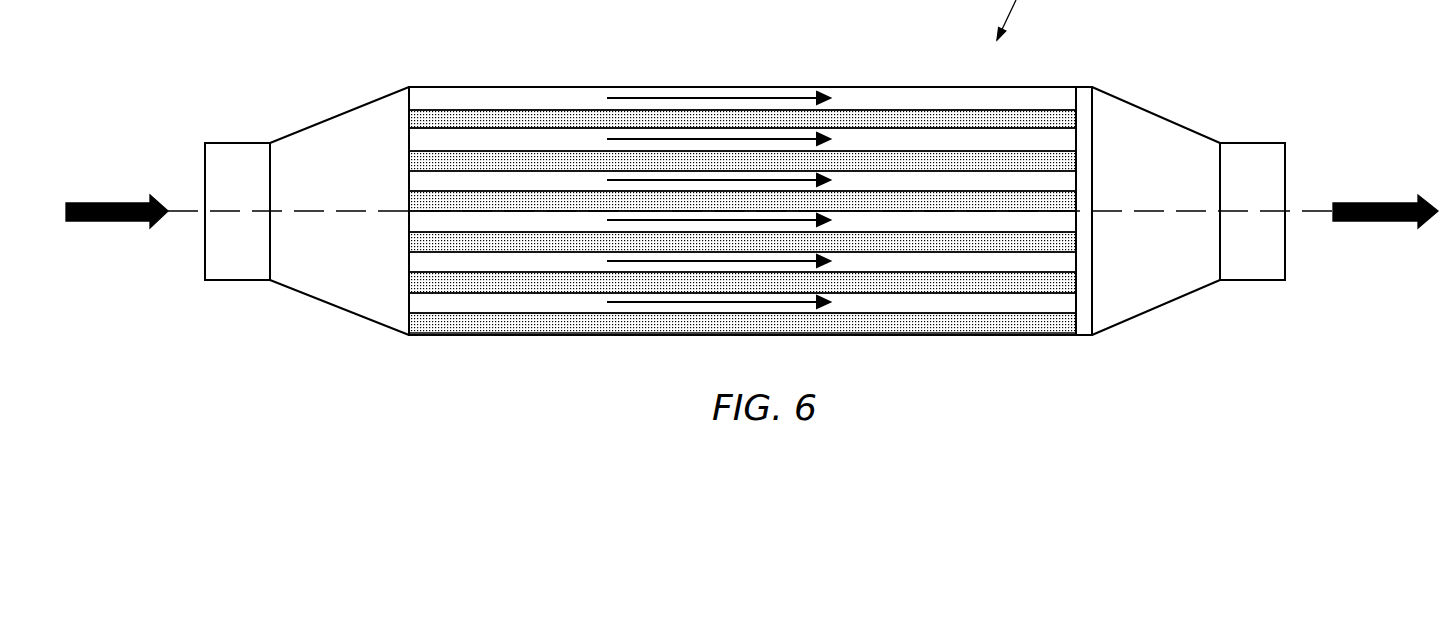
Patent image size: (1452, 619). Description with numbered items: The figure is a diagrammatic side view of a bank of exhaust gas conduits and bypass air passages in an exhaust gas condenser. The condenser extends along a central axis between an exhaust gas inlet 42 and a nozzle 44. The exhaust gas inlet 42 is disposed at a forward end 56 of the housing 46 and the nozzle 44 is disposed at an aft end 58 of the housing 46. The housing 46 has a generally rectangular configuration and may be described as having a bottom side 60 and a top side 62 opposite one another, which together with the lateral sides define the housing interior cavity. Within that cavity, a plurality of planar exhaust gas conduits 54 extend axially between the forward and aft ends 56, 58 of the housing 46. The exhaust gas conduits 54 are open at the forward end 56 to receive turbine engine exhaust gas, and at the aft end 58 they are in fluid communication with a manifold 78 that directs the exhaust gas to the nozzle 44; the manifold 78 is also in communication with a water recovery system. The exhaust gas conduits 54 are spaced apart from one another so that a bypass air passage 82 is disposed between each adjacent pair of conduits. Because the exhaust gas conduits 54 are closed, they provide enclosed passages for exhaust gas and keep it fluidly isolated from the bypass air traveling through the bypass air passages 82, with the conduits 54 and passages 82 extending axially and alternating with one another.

The exhaust gas inlet 42 is at (280, 98).
The nozzle 44 is at (1235, 112).
The housing 46 is at (485, 63).
The exhaust gas conduits 54 is at (414, 182).
The forward end 56 is at (408, 338).
The aft end 58 is at (1080, 88).
The bottom side 60 is at (610, 345).
The top side 62 is at (780, 68).
The manifold 78 is at (1083, 322).
The bypass air passage 82 is at (1072, 197).